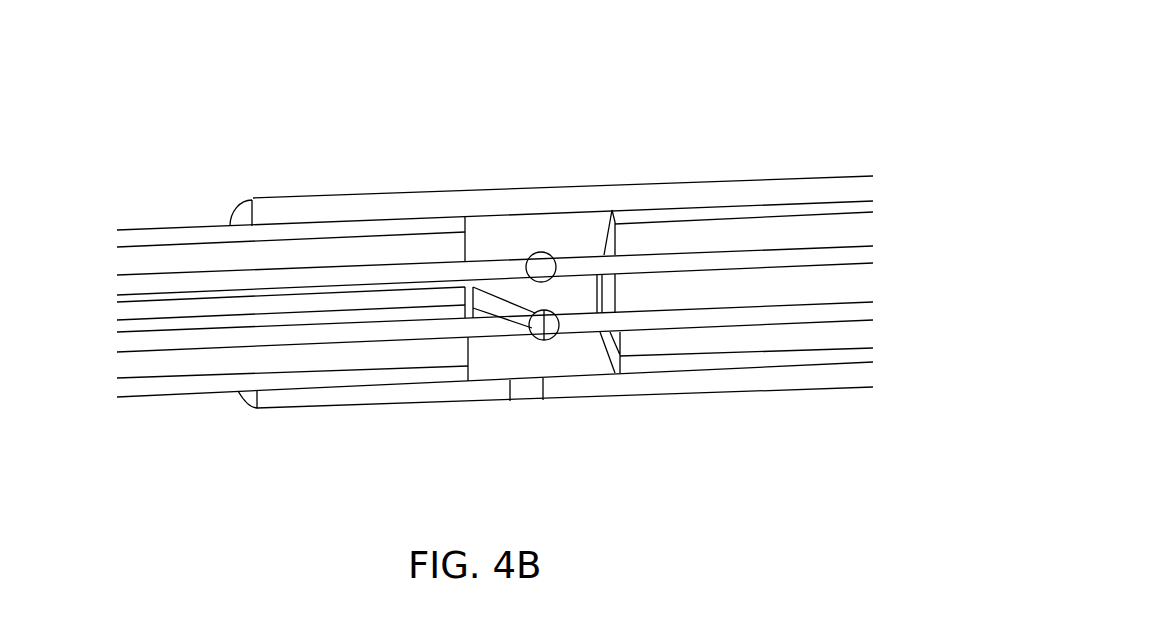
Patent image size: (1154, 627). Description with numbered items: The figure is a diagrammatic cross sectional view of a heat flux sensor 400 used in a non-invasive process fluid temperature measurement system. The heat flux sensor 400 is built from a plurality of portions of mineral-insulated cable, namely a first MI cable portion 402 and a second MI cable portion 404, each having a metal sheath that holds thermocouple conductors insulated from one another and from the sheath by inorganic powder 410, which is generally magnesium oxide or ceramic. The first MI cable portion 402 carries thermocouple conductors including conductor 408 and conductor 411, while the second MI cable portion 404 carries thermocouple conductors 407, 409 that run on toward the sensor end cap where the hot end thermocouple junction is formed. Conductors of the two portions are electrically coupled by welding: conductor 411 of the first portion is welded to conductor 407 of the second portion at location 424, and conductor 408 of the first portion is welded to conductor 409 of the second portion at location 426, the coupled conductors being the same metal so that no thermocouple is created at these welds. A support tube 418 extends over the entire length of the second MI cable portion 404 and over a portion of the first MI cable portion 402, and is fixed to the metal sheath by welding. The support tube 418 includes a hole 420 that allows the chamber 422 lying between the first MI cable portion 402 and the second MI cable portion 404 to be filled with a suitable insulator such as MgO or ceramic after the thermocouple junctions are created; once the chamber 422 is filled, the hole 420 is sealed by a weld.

The heat flux sensor 400 is at (676, 122).
The first MI cable portion 402 is at (203, 409).
The second MI cable portion 404 is at (830, 378).
The thermocouple conductor 407 is at (762, 260).
The thermocouple conductor 408 is at (170, 305).
The thermocouple conductor 409 is at (665, 355).
The inorganic powder 410 is at (350, 353).
The thermocouple conductor 411 is at (420, 273).
The support tube 418 is at (725, 380).
The hole 420 is at (523, 388).
The chamber 422 is at (487, 347).
The weld location 424 is at (543, 282).
The weld location 426 is at (548, 310).